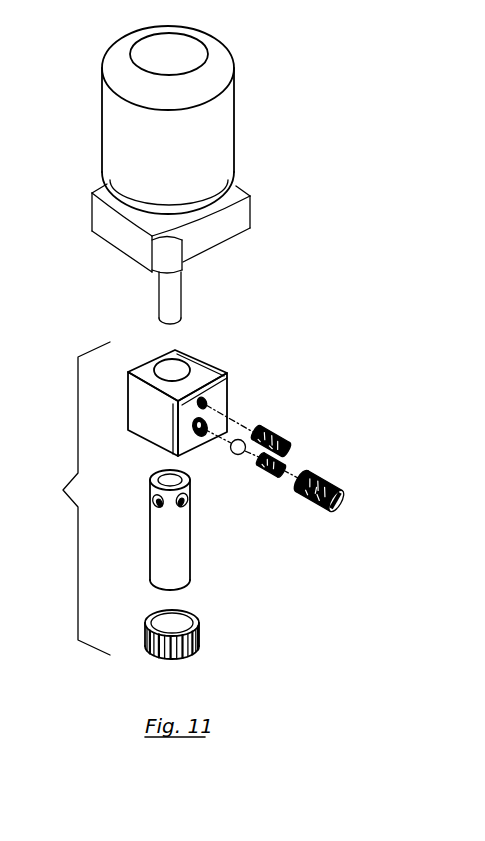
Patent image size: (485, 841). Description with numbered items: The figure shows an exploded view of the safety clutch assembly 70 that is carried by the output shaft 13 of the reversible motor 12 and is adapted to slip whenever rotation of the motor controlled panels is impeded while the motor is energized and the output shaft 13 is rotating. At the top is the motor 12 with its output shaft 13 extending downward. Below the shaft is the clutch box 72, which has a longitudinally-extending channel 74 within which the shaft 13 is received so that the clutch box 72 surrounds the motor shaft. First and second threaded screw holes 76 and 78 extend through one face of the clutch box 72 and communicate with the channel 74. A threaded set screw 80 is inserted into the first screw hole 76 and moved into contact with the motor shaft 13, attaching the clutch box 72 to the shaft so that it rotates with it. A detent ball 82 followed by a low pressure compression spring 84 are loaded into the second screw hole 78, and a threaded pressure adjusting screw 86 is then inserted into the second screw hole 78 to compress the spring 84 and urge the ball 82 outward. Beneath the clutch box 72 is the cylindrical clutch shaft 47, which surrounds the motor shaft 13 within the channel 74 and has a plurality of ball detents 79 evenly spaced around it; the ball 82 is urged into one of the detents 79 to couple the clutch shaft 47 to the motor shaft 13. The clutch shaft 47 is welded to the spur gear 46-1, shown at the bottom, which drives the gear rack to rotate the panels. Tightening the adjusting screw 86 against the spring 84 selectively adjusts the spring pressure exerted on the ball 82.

The reversible motor 12 is at (218, 138).
The output shaft 13 is at (177, 307).
The safety clutch assembly 70 is at (71, 498).
The clutch box 72 is at (198, 358).
The longitudinally-extending channel 74 is at (163, 360).
The first threaded screw hole 76 is at (208, 398).
The second threaded screw hole 78 is at (208, 420).
The ball detents 79 is at (175, 503).
The threaded set screw 80 is at (278, 433).
The detent ball 82 is at (235, 455).
The compression spring 84 is at (273, 475).
The threaded pressure adjusting screw 86 is at (320, 477).
The clutch shaft 47 is at (181, 557).
The spur gear 46-1 is at (197, 645).